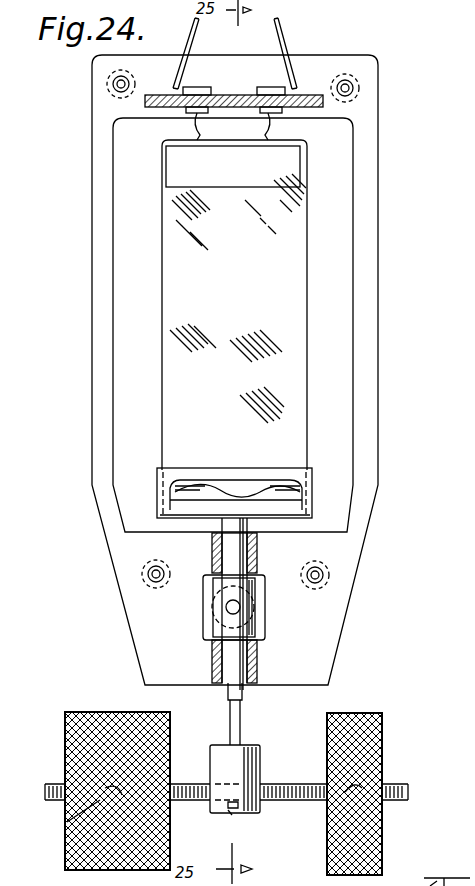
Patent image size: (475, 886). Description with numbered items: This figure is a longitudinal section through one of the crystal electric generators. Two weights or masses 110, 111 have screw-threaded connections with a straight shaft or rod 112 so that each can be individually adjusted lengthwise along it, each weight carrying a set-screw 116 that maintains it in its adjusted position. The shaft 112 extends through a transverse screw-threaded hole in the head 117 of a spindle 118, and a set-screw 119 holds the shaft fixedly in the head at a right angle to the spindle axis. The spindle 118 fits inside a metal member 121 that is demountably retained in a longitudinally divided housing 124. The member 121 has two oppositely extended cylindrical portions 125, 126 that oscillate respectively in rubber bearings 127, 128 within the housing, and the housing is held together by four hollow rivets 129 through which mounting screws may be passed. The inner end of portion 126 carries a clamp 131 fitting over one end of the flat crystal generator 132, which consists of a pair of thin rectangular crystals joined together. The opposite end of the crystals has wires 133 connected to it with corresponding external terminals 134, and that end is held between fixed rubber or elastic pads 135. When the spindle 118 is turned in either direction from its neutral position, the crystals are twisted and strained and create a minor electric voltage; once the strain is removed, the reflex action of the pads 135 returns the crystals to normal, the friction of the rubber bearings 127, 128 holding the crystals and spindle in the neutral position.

The weight 110 is at (78, 712).
The weight 111 is at (385, 735).
The shaft 112 is at (290, 800).
The set-screw 116 is at (385, 765).
The head 117 is at (243, 752).
The spindle 118 is at (237, 712).
The set-screw 119 is at (236, 818).
The metal member 121 is at (213, 621).
The housing 124 is at (366, 383).
The cylindrical portion 125 is at (232, 663).
The cylindrical portion 126 is at (228, 548).
The rubber bearing 127 is at (262, 666).
The rubber bearing 128 is at (258, 555).
The hollow rivet 129 is at (325, 580).
The clamp 131 is at (197, 490).
The crystal generator 132 is at (207, 320).
The wire 133 is at (278, 133).
The external terminal 134 is at (278, 42).
The elastic pad 135 is at (199, 170).